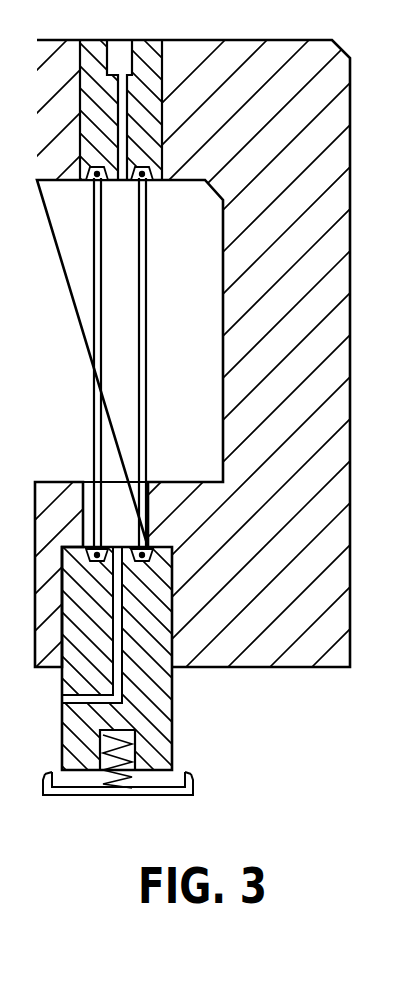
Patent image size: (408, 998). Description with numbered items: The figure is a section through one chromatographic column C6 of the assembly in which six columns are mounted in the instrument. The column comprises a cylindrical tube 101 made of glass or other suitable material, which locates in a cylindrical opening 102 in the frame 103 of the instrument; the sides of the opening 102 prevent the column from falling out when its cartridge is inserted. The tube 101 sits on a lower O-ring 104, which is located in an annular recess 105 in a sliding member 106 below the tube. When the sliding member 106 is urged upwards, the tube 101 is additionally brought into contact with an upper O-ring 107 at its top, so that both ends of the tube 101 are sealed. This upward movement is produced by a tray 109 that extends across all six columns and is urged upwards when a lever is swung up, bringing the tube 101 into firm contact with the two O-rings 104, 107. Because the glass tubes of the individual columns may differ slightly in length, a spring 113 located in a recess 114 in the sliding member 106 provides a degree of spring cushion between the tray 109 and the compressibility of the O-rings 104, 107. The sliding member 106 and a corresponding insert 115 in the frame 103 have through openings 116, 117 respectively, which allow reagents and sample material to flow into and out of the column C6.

The frame 103 is at (283, 67).
The cylindrical opening 102 is at (80, 508).
The through opening 116 is at (101, 90).
The insert 115 is at (147, 90).
The upper O-ring 107 is at (87, 187).
The cylindrical tube 101 is at (98, 277).
The chromatographic column C6 is at (112, 342).
The sliding member 106 is at (155, 752).
The through opening 117 is at (72, 693).
The lower O-ring 104 is at (92, 556).
The annular recess 105 is at (143, 556).
The recess 114 is at (130, 737).
The spring 113 is at (125, 795).
The tray 109 is at (76, 796).